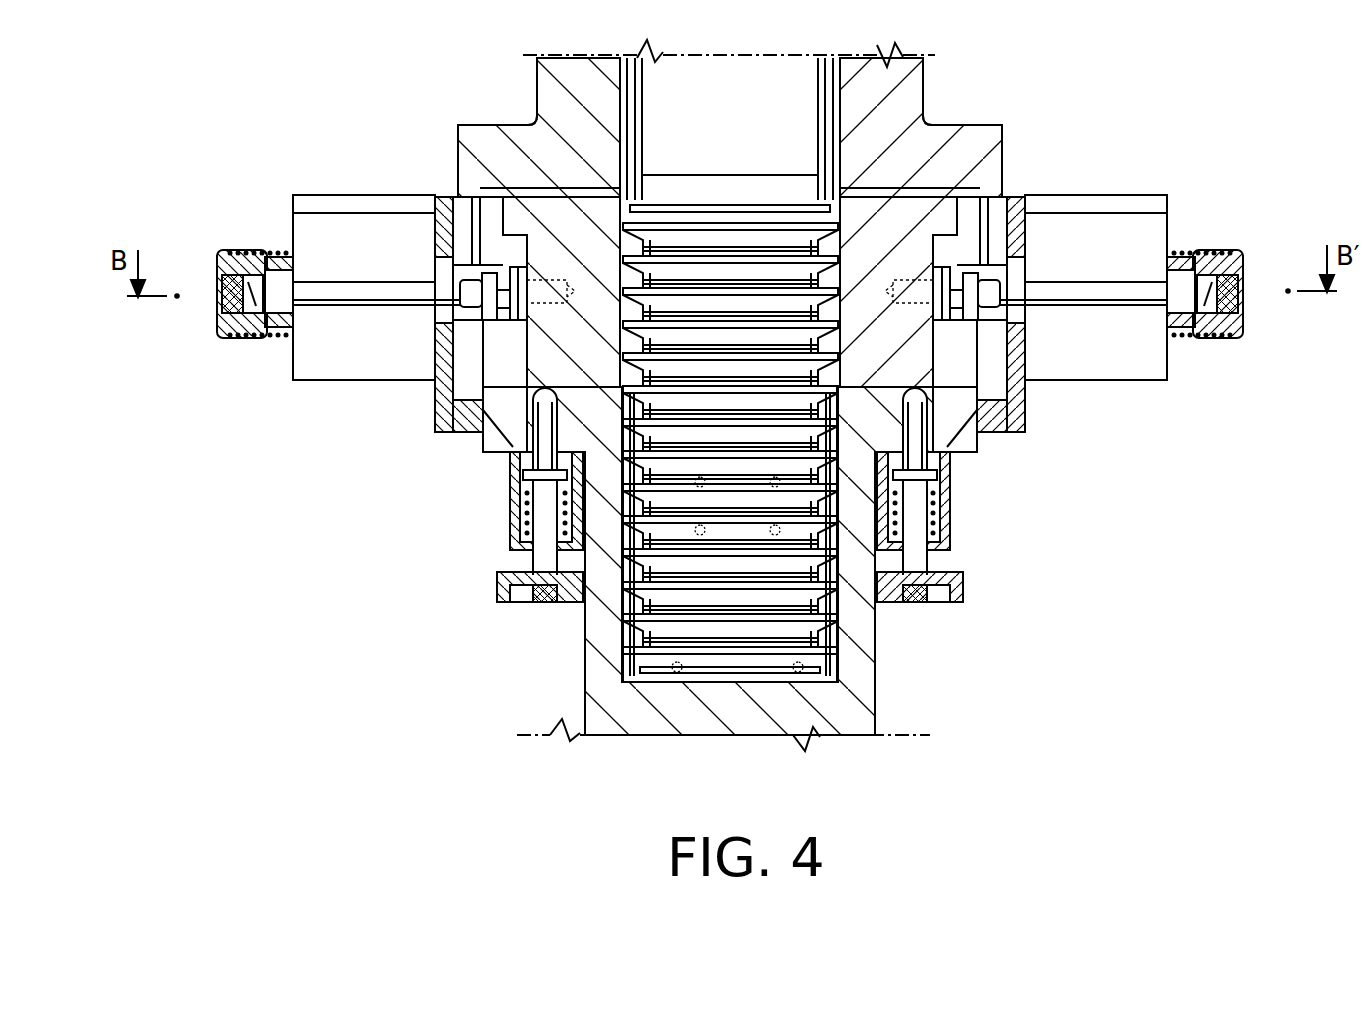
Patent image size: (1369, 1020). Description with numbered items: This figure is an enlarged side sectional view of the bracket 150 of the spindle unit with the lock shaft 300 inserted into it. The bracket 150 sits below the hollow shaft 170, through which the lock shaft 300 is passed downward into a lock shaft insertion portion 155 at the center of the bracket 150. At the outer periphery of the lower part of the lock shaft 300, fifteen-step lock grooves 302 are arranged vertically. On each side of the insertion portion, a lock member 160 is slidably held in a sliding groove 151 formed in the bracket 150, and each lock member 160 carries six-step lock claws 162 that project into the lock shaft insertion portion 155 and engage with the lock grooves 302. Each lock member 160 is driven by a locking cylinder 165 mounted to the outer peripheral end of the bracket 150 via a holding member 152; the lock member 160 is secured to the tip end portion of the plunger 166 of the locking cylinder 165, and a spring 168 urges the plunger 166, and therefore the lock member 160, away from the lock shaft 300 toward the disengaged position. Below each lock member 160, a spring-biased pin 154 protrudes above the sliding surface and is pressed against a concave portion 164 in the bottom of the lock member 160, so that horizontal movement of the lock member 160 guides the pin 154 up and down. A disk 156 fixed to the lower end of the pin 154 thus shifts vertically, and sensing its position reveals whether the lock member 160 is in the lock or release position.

The bracket 150 is at (895, 710).
The sliding grooves 151 is at (520, 385).
The holding member 152 is at (445, 430).
The pin 154 is at (512, 470).
The lock shaft insertion portion 155 is at (846, 542).
The disk 156 is at (497, 580).
The lock member 160 is at (465, 197).
The lock claws 162 is at (600, 193).
The concave portion 164 is at (578, 368).
The locking cylinder 165 is at (300, 232).
The plunger 166 is at (507, 283).
The spring 168 is at (253, 340).
The hollow shaft 170 is at (927, 65).
The lock shaft 300 is at (662, 103).
The lock grooves 302 is at (762, 233).